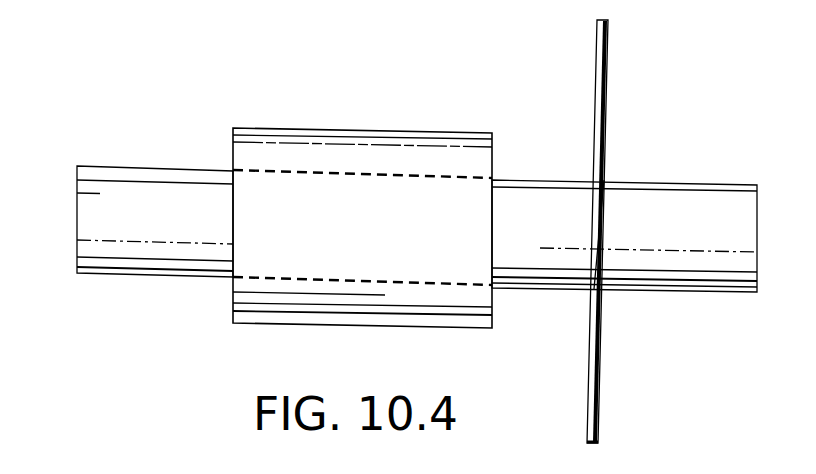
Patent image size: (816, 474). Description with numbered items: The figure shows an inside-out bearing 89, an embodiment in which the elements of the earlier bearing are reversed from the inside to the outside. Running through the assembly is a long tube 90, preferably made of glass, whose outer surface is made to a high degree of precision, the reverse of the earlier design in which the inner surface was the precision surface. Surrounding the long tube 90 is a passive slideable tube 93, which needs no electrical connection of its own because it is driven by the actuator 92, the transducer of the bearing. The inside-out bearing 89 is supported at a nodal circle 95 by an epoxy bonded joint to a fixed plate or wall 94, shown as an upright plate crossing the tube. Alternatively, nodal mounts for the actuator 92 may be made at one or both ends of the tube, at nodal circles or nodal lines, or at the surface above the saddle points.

The inside-out bearing 89 is at (232, 102).
The long tube 90 is at (113, 170).
The actuator 92 is at (93, 121).
The passive slideable tube 93 is at (338, 129).
The fixed plate or wall 94 is at (598, 95).
The nodal circle 95 is at (605, 178).